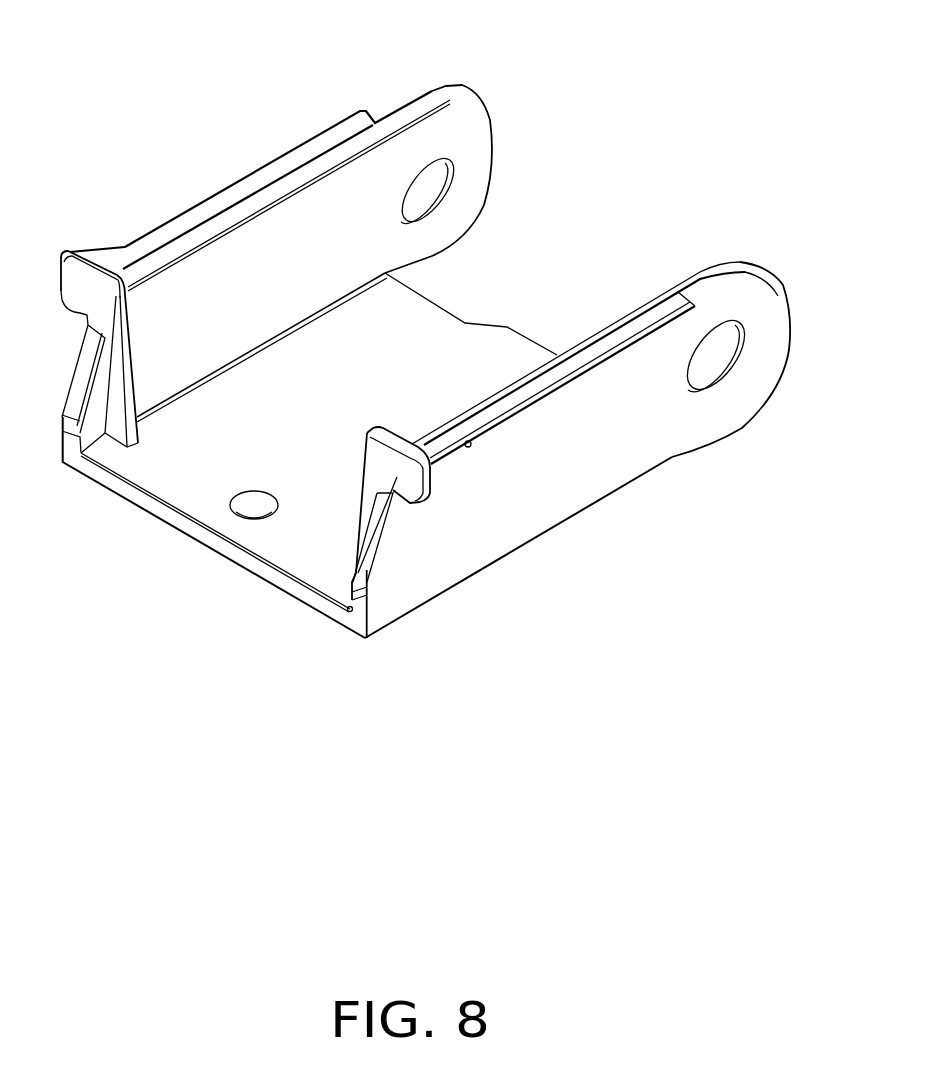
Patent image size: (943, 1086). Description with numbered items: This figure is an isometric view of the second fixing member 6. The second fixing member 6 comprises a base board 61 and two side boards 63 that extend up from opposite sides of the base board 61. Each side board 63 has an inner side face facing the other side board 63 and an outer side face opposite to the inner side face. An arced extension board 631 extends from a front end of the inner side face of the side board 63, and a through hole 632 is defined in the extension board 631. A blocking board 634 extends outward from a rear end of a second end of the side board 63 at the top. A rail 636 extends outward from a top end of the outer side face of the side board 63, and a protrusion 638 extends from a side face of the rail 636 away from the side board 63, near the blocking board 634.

The second fixing member 6 is at (186, 86).
The base board 61 is at (342, 447).
The side board 63 is at (568, 470).
The arced extension board 631 is at (753, 290).
The through hole 632 is at (705, 358).
The blocking board 634 is at (397, 478).
The rail 636 is at (592, 375).
The protrusion 638 is at (470, 448).